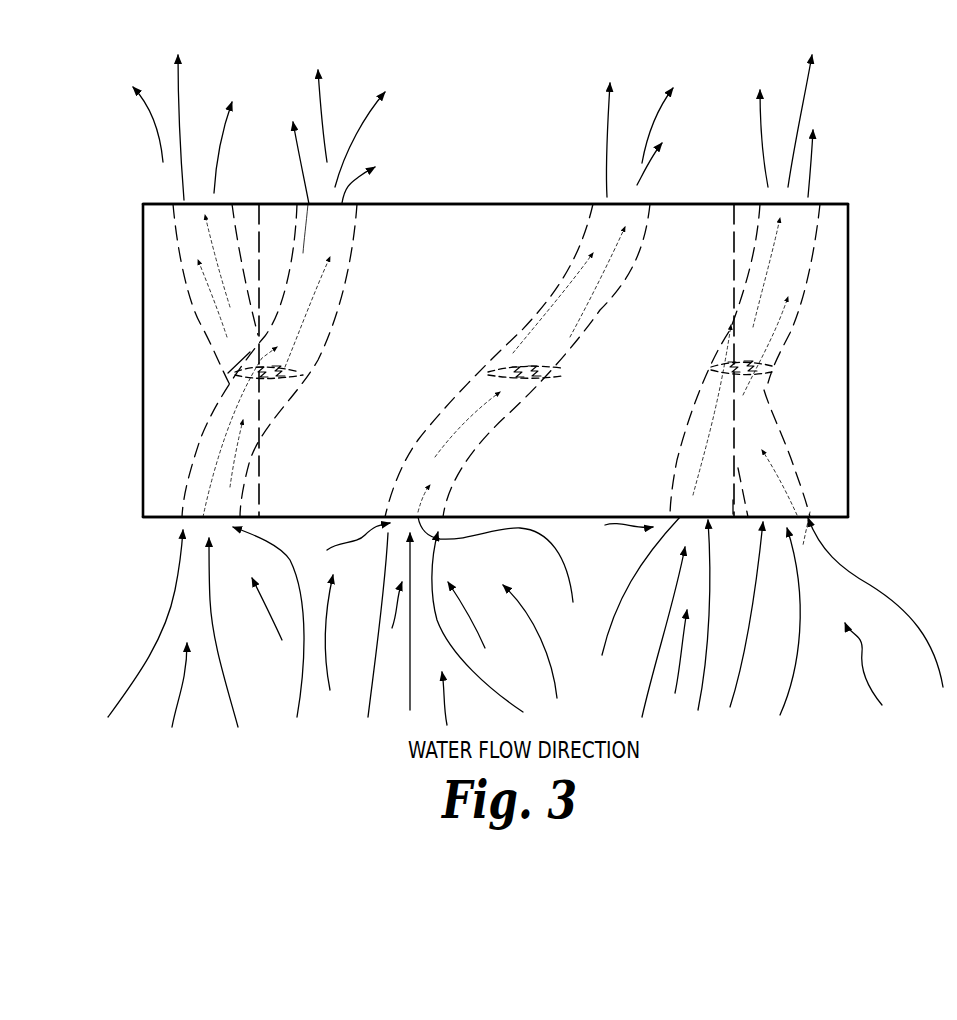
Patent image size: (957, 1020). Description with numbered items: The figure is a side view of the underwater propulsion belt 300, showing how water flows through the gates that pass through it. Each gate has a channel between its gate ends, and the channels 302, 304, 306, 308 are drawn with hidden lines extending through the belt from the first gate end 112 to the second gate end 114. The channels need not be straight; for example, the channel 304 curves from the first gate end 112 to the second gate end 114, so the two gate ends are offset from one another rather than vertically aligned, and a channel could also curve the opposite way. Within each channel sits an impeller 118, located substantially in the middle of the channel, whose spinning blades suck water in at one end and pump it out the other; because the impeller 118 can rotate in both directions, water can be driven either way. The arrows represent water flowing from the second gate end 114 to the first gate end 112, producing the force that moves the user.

The filter media sheet 300 is at (143, 232).
The first gate end 112 is at (815, 204).
The second gate end 114 is at (554, 517).
The channel 302 is at (203, 327).
The channel 304 is at (440, 420).
The channel 306 is at (746, 296).
The channel 308 is at (796, 464).
The impeller 118 is at (302, 377).